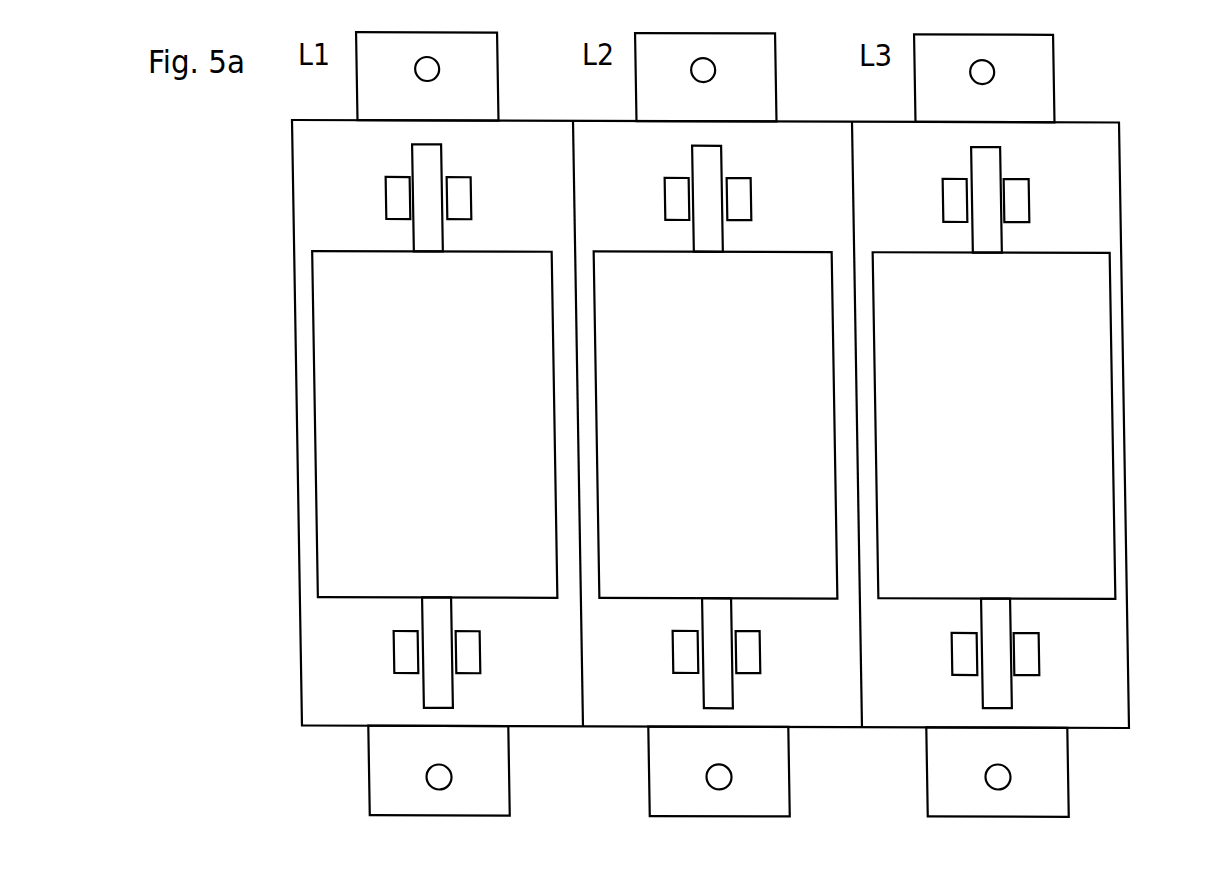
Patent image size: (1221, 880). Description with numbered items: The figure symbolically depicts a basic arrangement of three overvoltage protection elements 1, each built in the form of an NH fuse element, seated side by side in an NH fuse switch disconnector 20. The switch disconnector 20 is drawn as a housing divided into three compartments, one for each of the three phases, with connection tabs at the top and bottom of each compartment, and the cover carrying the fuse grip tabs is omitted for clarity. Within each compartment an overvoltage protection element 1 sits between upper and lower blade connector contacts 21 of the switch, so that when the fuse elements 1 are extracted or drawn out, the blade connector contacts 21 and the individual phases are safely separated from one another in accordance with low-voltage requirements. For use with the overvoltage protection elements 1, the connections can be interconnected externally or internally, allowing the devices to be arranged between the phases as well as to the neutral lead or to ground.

The overvoltage protection element 1 is at (713, 425).
The NH fuse switch disconnector 20 is at (1122, 203).
The blade connector contact 21 is at (952, 660).